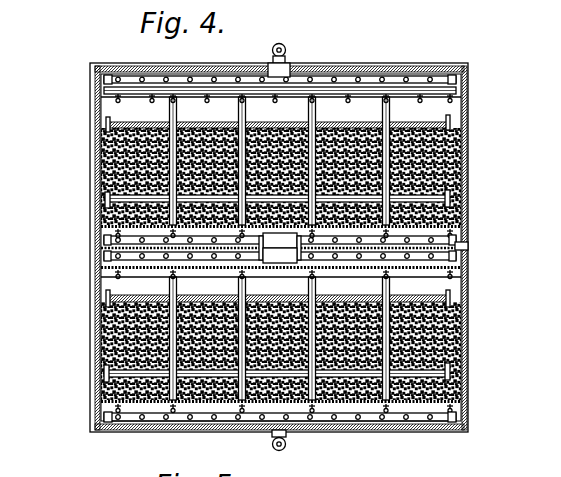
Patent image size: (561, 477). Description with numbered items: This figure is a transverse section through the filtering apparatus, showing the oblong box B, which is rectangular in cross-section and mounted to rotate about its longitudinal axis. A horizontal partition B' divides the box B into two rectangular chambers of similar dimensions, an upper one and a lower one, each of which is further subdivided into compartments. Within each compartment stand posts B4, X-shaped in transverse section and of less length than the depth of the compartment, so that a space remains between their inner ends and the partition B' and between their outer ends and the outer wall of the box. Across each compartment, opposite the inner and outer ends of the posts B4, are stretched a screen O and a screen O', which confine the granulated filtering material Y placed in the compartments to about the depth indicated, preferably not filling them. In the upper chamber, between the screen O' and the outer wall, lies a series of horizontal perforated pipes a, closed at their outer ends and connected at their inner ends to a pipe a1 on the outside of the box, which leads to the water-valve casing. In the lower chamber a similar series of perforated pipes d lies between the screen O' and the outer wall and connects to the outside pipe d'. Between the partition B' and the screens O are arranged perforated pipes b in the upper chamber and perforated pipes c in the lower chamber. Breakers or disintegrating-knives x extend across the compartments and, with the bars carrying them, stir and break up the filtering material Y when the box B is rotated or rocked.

The oblong box B is at (294, 247).
The partition B' is at (300, 241).
The posts B4 is at (245, 284).
The granulated filtering material Y is at (468, 137).
The breakers or disintegrating-knives x is at (356, 128).
The horizontal perforated pipes a is at (136, 82).
The pipe a1 is at (287, 51).
The screen O is at (256, 245).
The screen O' is at (277, 272).
The perforated pipes b is at (285, 235).
The perforated pipes c is at (280, 256).
The perforated pipes d is at (281, 430).
The pipe d' is at (272, 452).